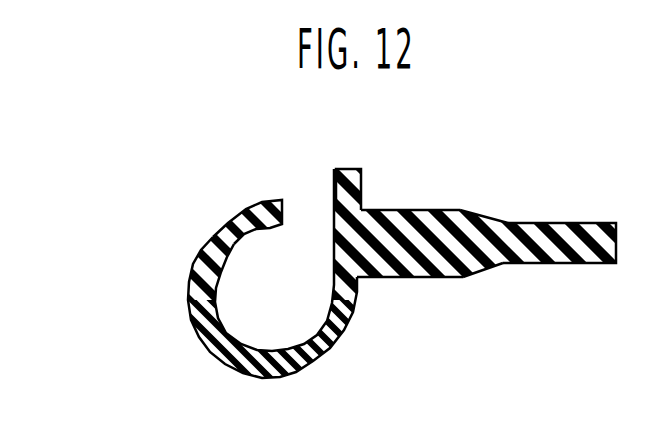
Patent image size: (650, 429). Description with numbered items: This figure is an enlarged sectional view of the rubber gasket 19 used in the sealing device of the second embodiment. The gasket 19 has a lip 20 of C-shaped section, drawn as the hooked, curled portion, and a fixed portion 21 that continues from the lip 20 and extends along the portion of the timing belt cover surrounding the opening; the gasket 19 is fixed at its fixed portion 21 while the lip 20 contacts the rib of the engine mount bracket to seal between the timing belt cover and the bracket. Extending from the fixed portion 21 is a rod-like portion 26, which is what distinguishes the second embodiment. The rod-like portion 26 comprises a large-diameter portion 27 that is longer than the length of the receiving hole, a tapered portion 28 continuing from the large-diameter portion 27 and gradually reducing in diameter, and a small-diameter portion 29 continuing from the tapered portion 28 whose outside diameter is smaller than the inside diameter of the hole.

The gasket 19 is at (243, 206).
The lip 20 is at (202, 257).
The fixed portion 21 is at (352, 190).
The rod-like portion 26 is at (412, 266).
The large-diameter portion 27 is at (382, 281).
The tapered portion 28 is at (487, 270).
The small-diameter portion 29 is at (577, 268).